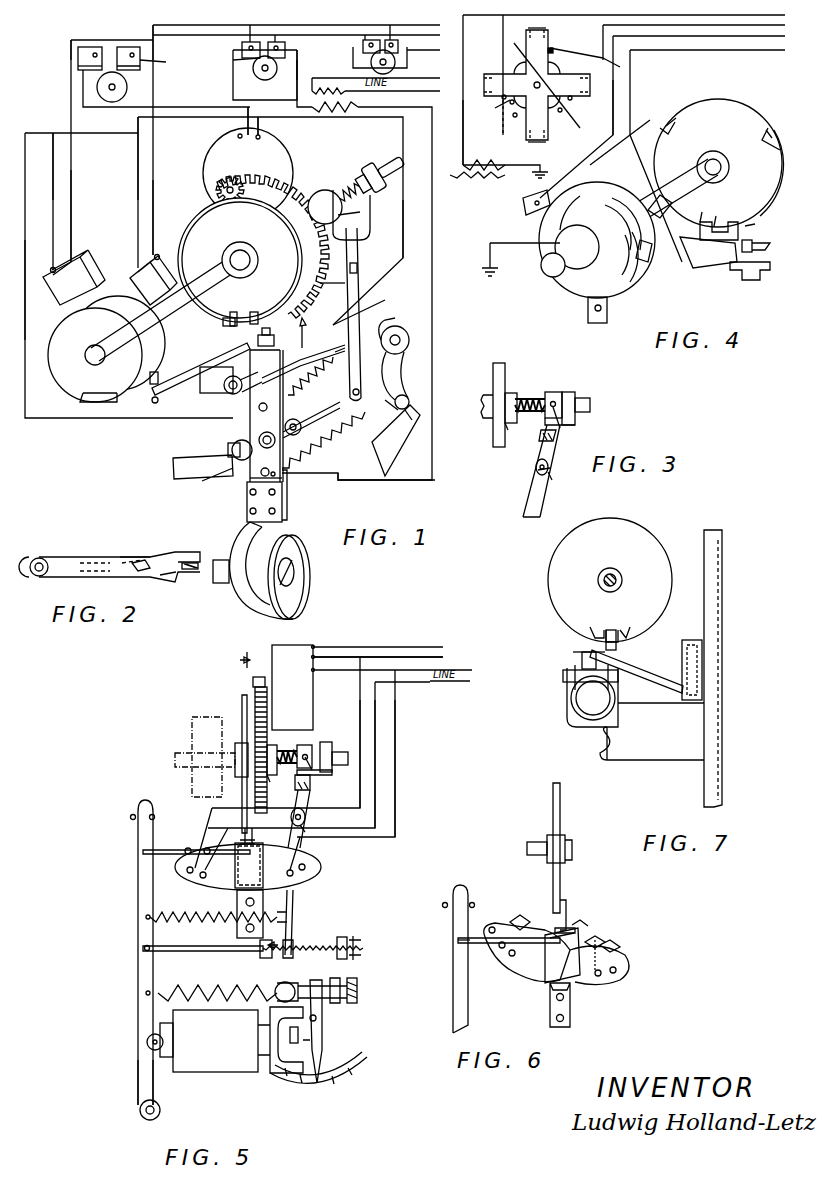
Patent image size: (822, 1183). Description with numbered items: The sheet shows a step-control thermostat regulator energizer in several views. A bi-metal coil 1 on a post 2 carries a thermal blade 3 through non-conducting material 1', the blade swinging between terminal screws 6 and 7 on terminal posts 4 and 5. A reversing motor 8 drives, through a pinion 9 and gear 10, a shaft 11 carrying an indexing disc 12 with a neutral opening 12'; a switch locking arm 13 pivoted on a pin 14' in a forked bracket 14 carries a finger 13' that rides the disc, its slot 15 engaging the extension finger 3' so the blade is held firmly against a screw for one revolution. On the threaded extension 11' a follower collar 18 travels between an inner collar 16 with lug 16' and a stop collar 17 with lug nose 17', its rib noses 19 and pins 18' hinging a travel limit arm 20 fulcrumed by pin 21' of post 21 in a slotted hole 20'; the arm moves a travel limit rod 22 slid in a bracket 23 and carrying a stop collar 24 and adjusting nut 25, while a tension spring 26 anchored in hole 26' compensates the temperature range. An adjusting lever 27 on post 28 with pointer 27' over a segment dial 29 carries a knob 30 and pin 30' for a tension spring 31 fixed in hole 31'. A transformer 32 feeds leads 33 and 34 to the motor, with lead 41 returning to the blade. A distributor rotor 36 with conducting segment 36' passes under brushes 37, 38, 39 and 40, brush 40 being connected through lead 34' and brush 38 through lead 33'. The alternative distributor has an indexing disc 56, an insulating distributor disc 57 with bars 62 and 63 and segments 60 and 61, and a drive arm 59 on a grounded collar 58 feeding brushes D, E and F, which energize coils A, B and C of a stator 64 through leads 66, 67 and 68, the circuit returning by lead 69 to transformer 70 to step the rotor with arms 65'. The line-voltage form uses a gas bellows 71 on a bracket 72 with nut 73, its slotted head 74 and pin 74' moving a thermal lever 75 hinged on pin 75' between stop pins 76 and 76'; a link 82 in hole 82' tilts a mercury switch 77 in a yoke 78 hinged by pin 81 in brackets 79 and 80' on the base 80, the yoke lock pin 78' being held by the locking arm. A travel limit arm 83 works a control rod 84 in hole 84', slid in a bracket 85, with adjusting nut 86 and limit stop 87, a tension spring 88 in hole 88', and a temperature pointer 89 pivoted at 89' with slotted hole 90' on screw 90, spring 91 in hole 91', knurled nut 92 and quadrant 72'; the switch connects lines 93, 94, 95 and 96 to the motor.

In FIG. 1, the bi-metal coil 1 is at (278, 484).
In FIG. 1, the non-conducting material 1' is at (279, 496).
In FIG. 1, the post 2 is at (212, 590).
In FIG. 1, the thermal blade 3 is at (243, 479).
In FIG. 4, the thermal blade 3 is at (754, 280).
In FIG. 1, the extension finger 3' is at (270, 329).
In FIG. 2, the extension finger 3' is at (192, 552).
In FIG. 4, the extension finger 3' is at (762, 240).
In FIG. 1, the terminal post 4 is at (204, 390).
In FIG. 1, the terminal post 5 is at (332, 356).
In FIG. 1, the terminal screw 6 is at (225, 392).
In FIG. 1, the terminal screw 7 is at (303, 357).
In FIG. 1, the reversing motor 8 is at (280, 156).
In FIG. 5, the reversing motor 8 is at (297, 645).
In FIG. 1, the power take-off pinion 9 is at (215, 182).
In FIG. 5, the power take-off pinion 9 is at (253, 681).
In FIG. 1, the gear 10 is at (295, 182).
In FIG. 3, the gear 10 is at (503, 372).
In FIG. 5, the gear 10 is at (255, 712).
In FIG. 1, the shaft 11 is at (174, 300).
In FIG. 4, the shaft 11 is at (638, 205).
In FIG. 5, the shaft 11 is at (201, 743).
In FIG. 6, the shaft 11 is at (537, 833).
In FIG. 1, the threaded extension 11' is at (348, 176).
In FIG. 3, the threaded extension 11' is at (535, 388).
In FIG. 5, the threaded extension 11' is at (296, 738).
In FIG. 1, the indexing disc 12 is at (237, 260).
In FIG. 5, the indexing disc 12 is at (219, 764).
In FIG. 6, the indexing disc 12 is at (568, 848).
In FIG. 7, the indexing disc 12 is at (610, 580).
In FIG. 1, the neutral position opening 12' is at (264, 306).
In FIG. 7, the neutral position opening 12' is at (606, 621).
In FIG. 1, the switch locking arm 13 is at (201, 369).
In FIG. 4, the switch locking arm 13 is at (708, 262).
In FIG. 6, the switch locking arm 13 is at (581, 916).
In FIG. 7, the switch locking arm 13 is at (636, 655).
In FIG. 1, the finger 13' is at (236, 307).
In FIG. 2, the finger 13' is at (143, 576).
In FIG. 4, the finger 13' is at (721, 216).
In FIG. 6, the finger 13' is at (577, 906).
In FIG. 7, the finger 13' is at (624, 624).
In FIG. 1, the forked bracket 14 is at (139, 393).
In FIG. 2, the forked bracket 14 is at (44, 556).
In FIG. 7, the forked bracket 14 is at (725, 668).
In FIG. 1, the pin 14' is at (148, 418).
In FIG. 7, the pin 14' is at (714, 647).
In FIG. 1, the slot 15 is at (275, 318).
In FIG. 2, the slot 15 is at (177, 578).
In FIG. 6, the slot 15 is at (590, 926).
In FIG. 1, the inner travel limit collar 16 is at (325, 194).
In FIG. 3, the inner travel limit collar 16 is at (519, 393).
In FIG. 5, the inner travel limit collar 16 is at (266, 742).
In FIG. 6, the inner travel limit collar 16 is at (569, 839).
In FIG. 1, the lug 16' is at (365, 220).
In FIG. 3, the lug 16' is at (517, 433).
In FIG. 5, the lug 16' is at (278, 787).
In FIG. 6, the lug 16' is at (580, 857).
In FIG. 1, the stop collar 17 is at (382, 165).
In FIG. 3, the stop collar 17 is at (581, 395).
In FIG. 5, the stop collar 17 is at (337, 748).
In FIG. 3, the lug nose 17' is at (575, 423).
In FIG. 5, the lug nose 17' is at (327, 779).
In FIG. 3, the follower travel limit collar 18 is at (560, 389).
In FIG. 5, the follower travel limit collar 18 is at (316, 732).
In FIG. 3, the pins 18' is at (566, 427).
In FIG. 5, the pins 18' is at (328, 739).
In FIG. 1, the rib noses 19 is at (362, 218).
In FIG. 3, the rib noses 19 is at (541, 438).
In FIG. 5, the rib noses 19 is at (312, 787).
In FIG. 1, the travel limit arm 20 is at (340, 314).
In FIG. 3, the travel limit arm 20 is at (530, 471).
In FIG. 3, the slotted hole 20' is at (524, 473).
In FIG. 1, the post 21 is at (329, 294).
In FIG. 3, the post 21 is at (554, 462).
In FIG. 5, the post 21 is at (315, 819).
In FIG. 1, the pin 21' is at (370, 265).
In FIG. 3, the pin 21' is at (562, 480).
In FIG. 5, the pin 21' is at (330, 839).
In FIG. 1, the travel limit rod 22 is at (310, 426).
In FIG. 1, the bracket 23 is at (173, 470).
In FIG. 1, the stop collar 24 is at (298, 414).
In FIG. 1, the knurled adjusting nut 25 is at (230, 447).
In FIG. 1, the tension spring 26 is at (315, 376).
In FIG. 1, the hole 26' is at (242, 417).
In FIG. 1, the adjusting lever 27 is at (404, 376).
In FIG. 1, the pointer 27' is at (432, 406).
In FIG. 3, the pointer 27' is at (472, 404).
In FIG. 1, the post 28 is at (399, 327).
In FIG. 1, the segment dial 29 is at (402, 445).
In FIG. 1, the knob 30 is at (411, 391).
In FIG. 1, the pin 30' is at (379, 417).
In FIG. 1, the tension spring 31 is at (323, 440).
In FIG. 1, the hole 31' is at (250, 493).
In FIG. 1, the transformer 32 is at (335, 113).
In FIG. 1, the lead 33 is at (415, 229).
In FIG. 1, the lead 33' is at (123, 158).
In FIG. 1, the lead 34 is at (35, 286).
In FIG. 1, the lead 34' is at (75, 166).
In FIG. 1, the distributor rotor 36 is at (100, 354).
In FIG. 1, the segment 36' is at (89, 414).
In FIG. 1, the brush 37 is at (150, 255).
In FIG. 1, the brush 38 is at (138, 272).
In FIG. 1, the brush 39 is at (75, 271).
In FIG. 1, the brush 40 is at (60, 268).
In FIG. 1, the lead 41 is at (393, 487).
In FIG. 4, the indexing disc 56 is at (725, 110).
In FIG. 4, the distributor disc 57 is at (580, 292).
In FIG. 4, the collar 58 is at (548, 282).
In FIG. 4, the driving contact arm 59 is at (595, 245).
In FIG. 4, the segment 60 is at (640, 265).
In FIG. 4, the segment 61 is at (618, 200).
In FIG. 4, the conductor bar 62 is at (650, 280).
In FIG. 4, the conductor bar 63 is at (585, 195).
In FIG. 4, the stator 64 is at (503, 60).
In FIG. 4, the depending arms 65' is at (488, 104).
In FIG. 4, the lead 66 is at (629, 132).
In FIG. 4, the lead 67 is at (625, 100).
In FIG. 4, the lead 68 is at (620, 68).
In FIG. 4, the lead 69 is at (463, 88).
In FIG. 4, the transformer 70 is at (477, 177).
In FIG. 5, the gas expansion bellows 71 is at (214, 1072).
In FIG. 5, the bracket 72 is at (280, 1052).
In FIG. 5, the graduated quadrant 72' is at (318, 1080).
In FIG. 5, the nut 73 is at (300, 1034).
In FIG. 5, the slotted head 74 is at (142, 1049).
In FIG. 5, the pin 74' is at (134, 1042).
In FIG. 5, the thermal lever 75 is at (130, 1082).
In FIG. 6, the thermal lever 75 is at (450, 959).
In FIG. 5, the pin 75' is at (140, 1117).
In FIG. 5, the stop pin 76 is at (131, 952).
In FIG. 6, the stop pin 76 is at (435, 899).
In FIG. 5, the stop pin 76' is at (164, 812).
In FIG. 6, the stop pin 76' is at (484, 900).
In FIG. 5, the mercury switch 77 is at (318, 866).
In FIG. 6, the mercury switch 77 is at (510, 962).
In FIG. 5, the yoke 78 is at (285, 861).
In FIG. 6, the yoke 78 is at (551, 967).
In FIG. 7, the lock pin 78' is at (579, 649).
In FIG. 7, the bracket 79 is at (567, 700).
In FIG. 7, the thermostat base 80 is at (652, 744).
In FIG. 7, the bracket 80' is at (610, 700).
In FIG. 6, the pin 81 is at (572, 1000).
In FIG. 7, the pin 81 is at (563, 680).
In FIG. 5, the link 82 is at (199, 861).
In FIG. 6, the link 82 is at (509, 955).
In FIG. 6, the hole 82' is at (599, 968).
In FIG. 5, the travel limit arm 83 is at (295, 903).
In FIG. 5, the travel limit adjustment control rod 84 is at (253, 958).
In FIG. 5, the hole 84' is at (125, 952).
In FIG. 5, the bracket 85 is at (358, 950).
In FIG. 5, the knurled adjusting nut 86 is at (343, 937).
In FIG. 5, the limit stop 87 is at (260, 957).
In FIG. 5, the tension spring 88 is at (213, 925).
In FIG. 5, the hole 88' is at (125, 917).
In FIG. 5, the pointer 89 is at (344, 1031).
In FIG. 5, the pivot 89' is at (337, 1017).
In FIG. 5, the temperature adjusting screw 90 is at (342, 990).
In FIG. 5, the slotted hole 90' is at (290, 984).
In FIG. 5, the tension spring 91 is at (217, 985).
In FIG. 5, the hole 91' is at (129, 995).
In FIG. 5, the knurled nut 92 is at (357, 982).
In FIG. 5, the line 93 is at (360, 790).
In FIG. 5, the line 94 is at (375, 762).
In FIG. 6, the line 94 is at (515, 913).
In FIG. 5, the line 95 is at (395, 723).
In FIG. 6, the line 95 is at (605, 937).
In FIG. 5, the line 96 is at (387, 650).
In FIG. 4, the pole coil A is at (563, 123).
In FIG. 4, the pole coil B is at (556, 50).
In FIG. 4, the pole coil C is at (512, 118).
In FIG. 4, the brush D is at (607, 315).
In FIG. 4, the brush E is at (664, 195).
In FIG. 4, the brush F is at (526, 212).